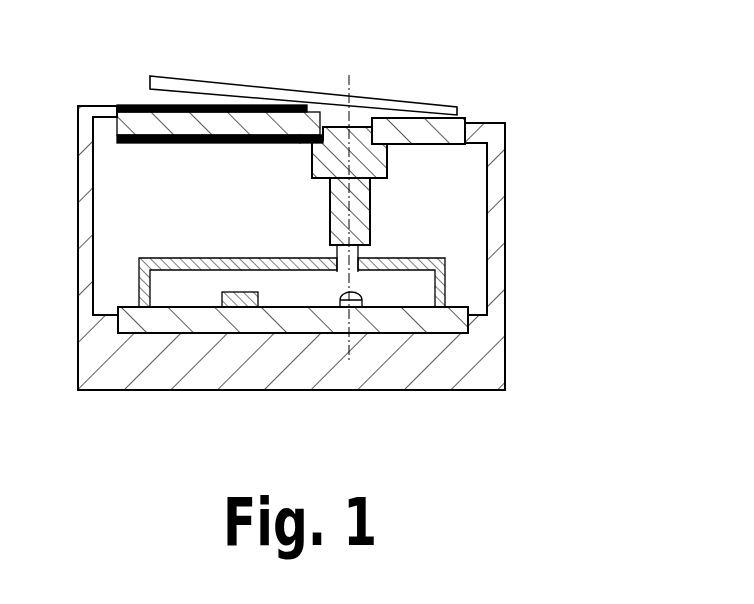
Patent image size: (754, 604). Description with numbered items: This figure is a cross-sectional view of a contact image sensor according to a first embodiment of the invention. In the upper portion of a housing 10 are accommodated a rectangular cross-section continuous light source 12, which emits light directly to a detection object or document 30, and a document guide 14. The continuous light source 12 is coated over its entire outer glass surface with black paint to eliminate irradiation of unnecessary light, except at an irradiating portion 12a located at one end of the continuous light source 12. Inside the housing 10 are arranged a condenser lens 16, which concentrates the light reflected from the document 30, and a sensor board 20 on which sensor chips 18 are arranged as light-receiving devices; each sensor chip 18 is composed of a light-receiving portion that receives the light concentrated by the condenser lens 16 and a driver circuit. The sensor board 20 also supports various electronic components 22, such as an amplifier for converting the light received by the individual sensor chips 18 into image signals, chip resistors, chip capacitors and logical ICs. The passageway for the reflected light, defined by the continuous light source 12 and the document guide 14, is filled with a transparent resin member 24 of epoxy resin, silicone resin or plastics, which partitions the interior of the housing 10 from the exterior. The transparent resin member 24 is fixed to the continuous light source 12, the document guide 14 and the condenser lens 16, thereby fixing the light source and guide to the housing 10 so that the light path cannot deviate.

The housing 10 is at (505, 192).
The continuous light source 12 is at (128, 105).
The irradiating portion 12a is at (319, 108).
The document guide 14 is at (457, 117).
The condenser lens 16 is at (370, 215).
The sensor chip 18 is at (341, 300).
The sensor board 20 is at (397, 320).
The electronic components 22 is at (237, 292).
The transparent resin member 24 is at (358, 127).
The document 30 is at (203, 77).